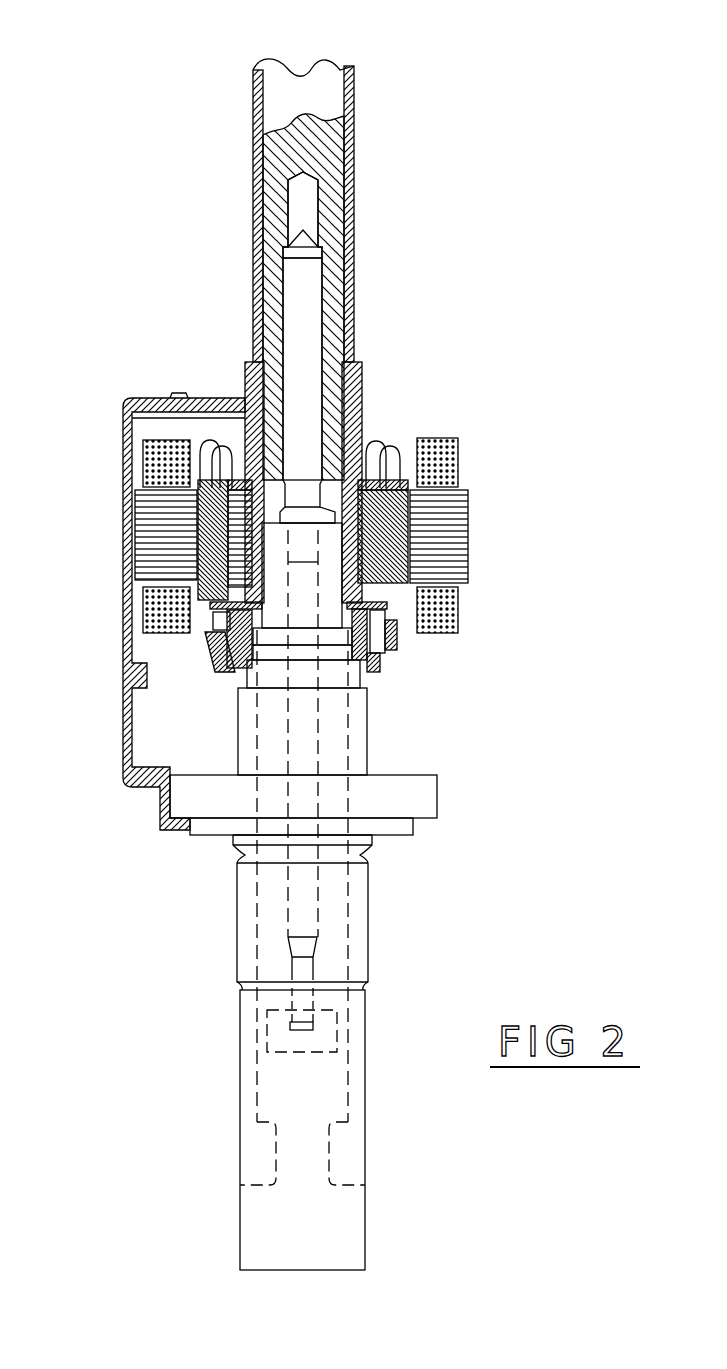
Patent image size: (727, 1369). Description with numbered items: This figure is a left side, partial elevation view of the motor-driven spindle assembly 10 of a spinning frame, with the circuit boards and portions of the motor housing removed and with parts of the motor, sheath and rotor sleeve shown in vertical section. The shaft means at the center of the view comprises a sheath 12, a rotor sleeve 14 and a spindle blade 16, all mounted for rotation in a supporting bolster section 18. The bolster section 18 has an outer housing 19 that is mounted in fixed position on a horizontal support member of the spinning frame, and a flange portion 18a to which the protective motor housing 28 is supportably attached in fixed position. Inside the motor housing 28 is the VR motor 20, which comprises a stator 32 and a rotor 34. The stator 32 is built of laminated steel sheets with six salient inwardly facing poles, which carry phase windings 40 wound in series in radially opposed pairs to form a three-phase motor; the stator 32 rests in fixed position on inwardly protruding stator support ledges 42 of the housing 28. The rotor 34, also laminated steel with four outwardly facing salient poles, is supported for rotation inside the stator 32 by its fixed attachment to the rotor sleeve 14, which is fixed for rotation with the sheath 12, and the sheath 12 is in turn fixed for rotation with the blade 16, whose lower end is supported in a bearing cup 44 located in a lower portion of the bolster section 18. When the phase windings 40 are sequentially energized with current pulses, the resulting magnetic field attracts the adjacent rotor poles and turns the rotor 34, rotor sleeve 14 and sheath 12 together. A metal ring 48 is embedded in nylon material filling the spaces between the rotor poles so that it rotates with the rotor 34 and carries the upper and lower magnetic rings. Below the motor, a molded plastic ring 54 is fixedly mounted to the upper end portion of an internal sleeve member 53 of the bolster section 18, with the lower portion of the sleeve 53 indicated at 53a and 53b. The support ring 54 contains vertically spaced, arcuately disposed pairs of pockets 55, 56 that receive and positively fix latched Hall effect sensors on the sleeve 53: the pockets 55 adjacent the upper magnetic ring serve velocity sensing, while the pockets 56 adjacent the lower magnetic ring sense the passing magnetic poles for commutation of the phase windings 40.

The spindle assembly 10 is at (459, 390).
The sheath 12 is at (305, 83).
The rotor sleeve 14 is at (355, 312).
The spindle blade 16 is at (300, 310).
The bolster section 18 is at (380, 896).
The flange portion 18a is at (418, 798).
The outer housing 19 is at (235, 935).
The VR motor 20 is at (470, 513).
The motor housing 28 is at (128, 706).
The stator 32 is at (472, 552).
The rotor 34 is at (392, 480).
The phase windings 40 is at (457, 452).
The stator support ledges 42 is at (135, 480).
The bearing cup 44 is at (323, 1038).
The metal ring 48 is at (195, 647).
The internal sleeve member 53 is at (268, 548).
The pin lug 53a is at (283, 1155).
The pin end 53b is at (330, 1223).
The molded plastic ring 54 is at (218, 670).
The pockets 55 is at (200, 625).
The pockets 56 is at (393, 655).